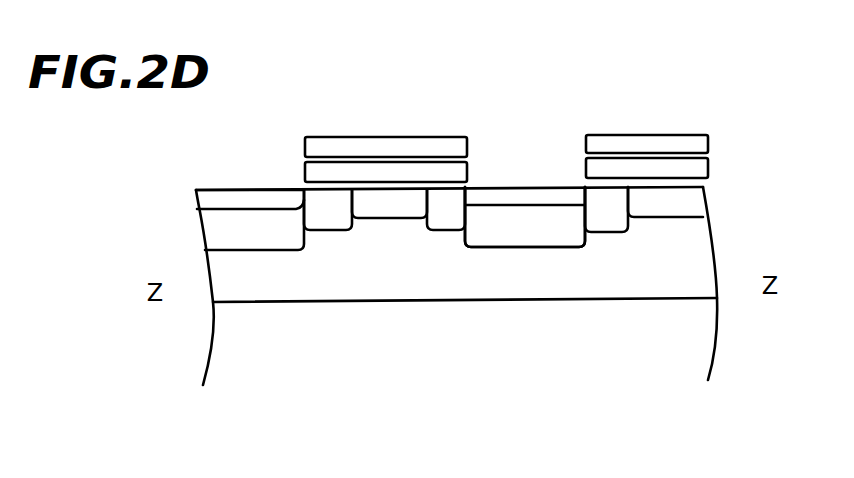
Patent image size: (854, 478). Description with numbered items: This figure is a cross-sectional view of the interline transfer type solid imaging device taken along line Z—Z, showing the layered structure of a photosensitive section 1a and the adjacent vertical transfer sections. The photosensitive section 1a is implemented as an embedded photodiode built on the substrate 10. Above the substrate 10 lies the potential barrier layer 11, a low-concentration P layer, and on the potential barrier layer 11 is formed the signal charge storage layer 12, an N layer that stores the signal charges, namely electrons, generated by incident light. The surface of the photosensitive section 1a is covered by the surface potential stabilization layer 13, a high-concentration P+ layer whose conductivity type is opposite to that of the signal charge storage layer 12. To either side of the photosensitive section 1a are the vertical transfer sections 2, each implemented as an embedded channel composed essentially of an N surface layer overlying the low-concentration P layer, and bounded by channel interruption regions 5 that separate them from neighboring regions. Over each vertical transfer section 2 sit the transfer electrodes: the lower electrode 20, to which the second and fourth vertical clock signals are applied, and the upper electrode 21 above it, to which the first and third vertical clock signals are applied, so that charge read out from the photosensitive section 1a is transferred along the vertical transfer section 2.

The photosensitive section 1a is at (463, 95).
The vertical transfer section 2 is at (388, 200).
The channel interruption region 5 is at (328, 207).
The substrate 10 is at (456, 286).
The potential barrier layer 11 is at (465, 285).
The signal charge storage layer 12 is at (267, 232).
The surface potential stabilization layer 13 is at (223, 200).
The lower electrode 20 is at (698, 170).
The upper electrode 21 is at (697, 140).